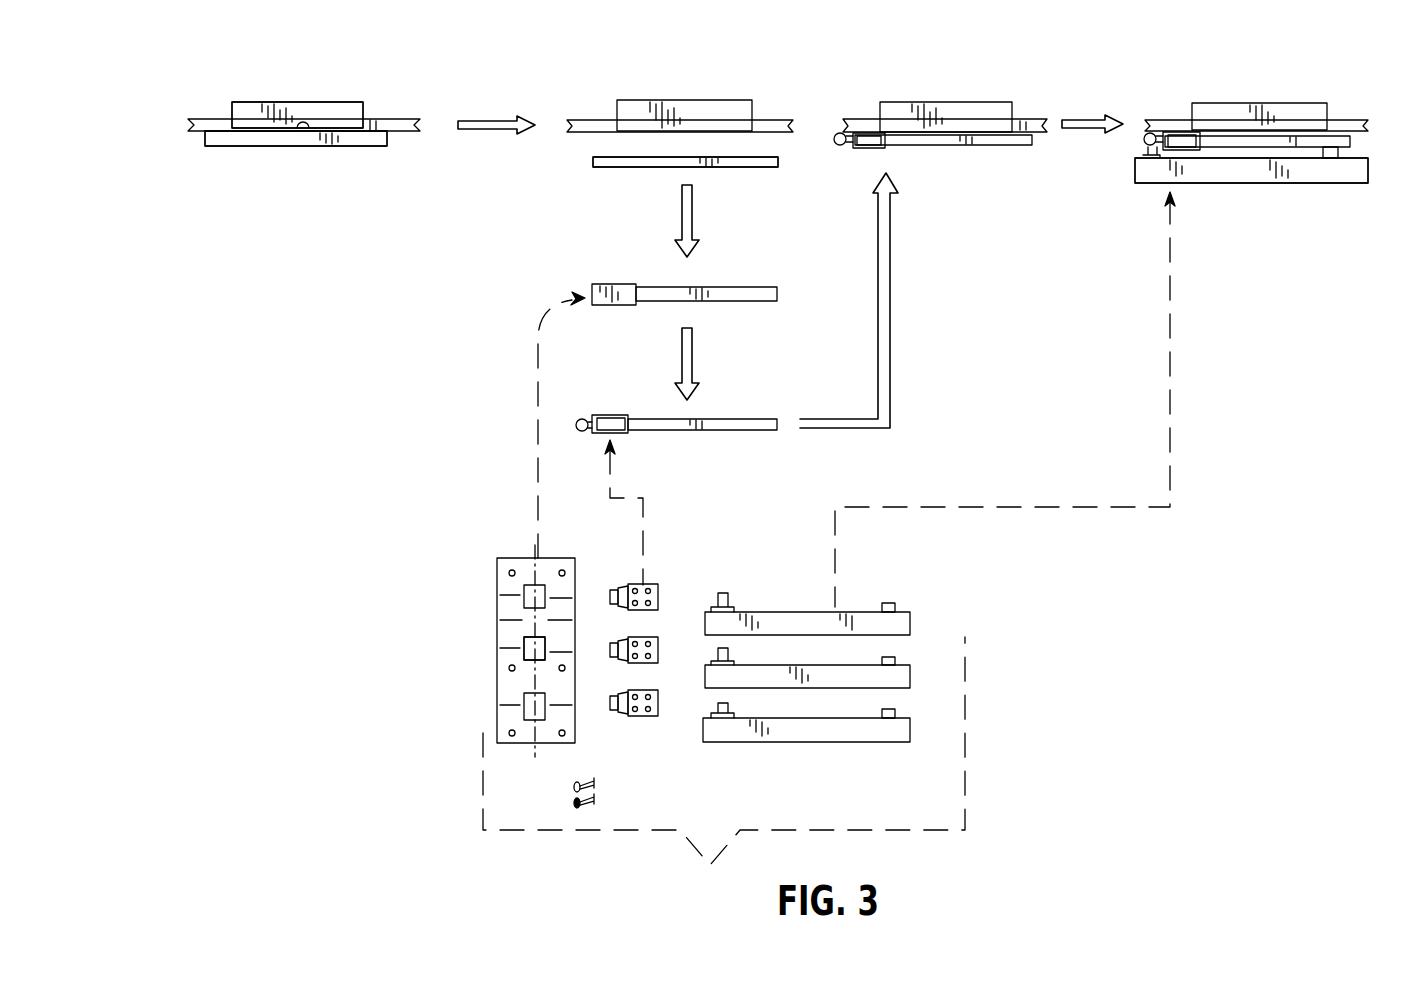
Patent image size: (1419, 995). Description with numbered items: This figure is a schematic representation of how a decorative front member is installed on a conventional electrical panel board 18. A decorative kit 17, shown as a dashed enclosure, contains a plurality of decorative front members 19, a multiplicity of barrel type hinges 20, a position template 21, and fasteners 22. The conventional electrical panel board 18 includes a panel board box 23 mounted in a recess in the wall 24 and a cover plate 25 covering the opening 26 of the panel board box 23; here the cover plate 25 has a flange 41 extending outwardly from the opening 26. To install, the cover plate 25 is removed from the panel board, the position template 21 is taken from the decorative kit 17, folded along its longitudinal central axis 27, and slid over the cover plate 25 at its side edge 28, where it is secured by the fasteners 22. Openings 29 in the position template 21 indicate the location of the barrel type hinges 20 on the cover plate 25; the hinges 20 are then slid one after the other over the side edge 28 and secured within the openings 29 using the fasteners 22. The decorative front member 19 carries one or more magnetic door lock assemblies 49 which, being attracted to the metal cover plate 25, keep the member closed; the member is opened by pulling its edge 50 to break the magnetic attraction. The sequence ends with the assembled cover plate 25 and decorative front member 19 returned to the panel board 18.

The decorative kit 17 is at (690, 853).
The conventional electrical panel board 18 is at (232, 101).
The decorative front member 19 is at (1270, 180).
The barrel type hinge 20 is at (615, 414).
The position template 21 is at (605, 284).
The fasteners 22 is at (600, 780).
The panel board box 23 is at (313, 107).
The wall 24 is at (385, 121).
The cover plate 25 is at (233, 141).
The opening 26 is at (305, 136).
The longitudinal central axis 27 is at (535, 675).
The side edge 28 is at (600, 167).
The openings 29 is at (524, 647).
The flange 41 is at (370, 148).
The magnetic door lock assembly 49 is at (1330, 160).
The edge 50 is at (1362, 175).